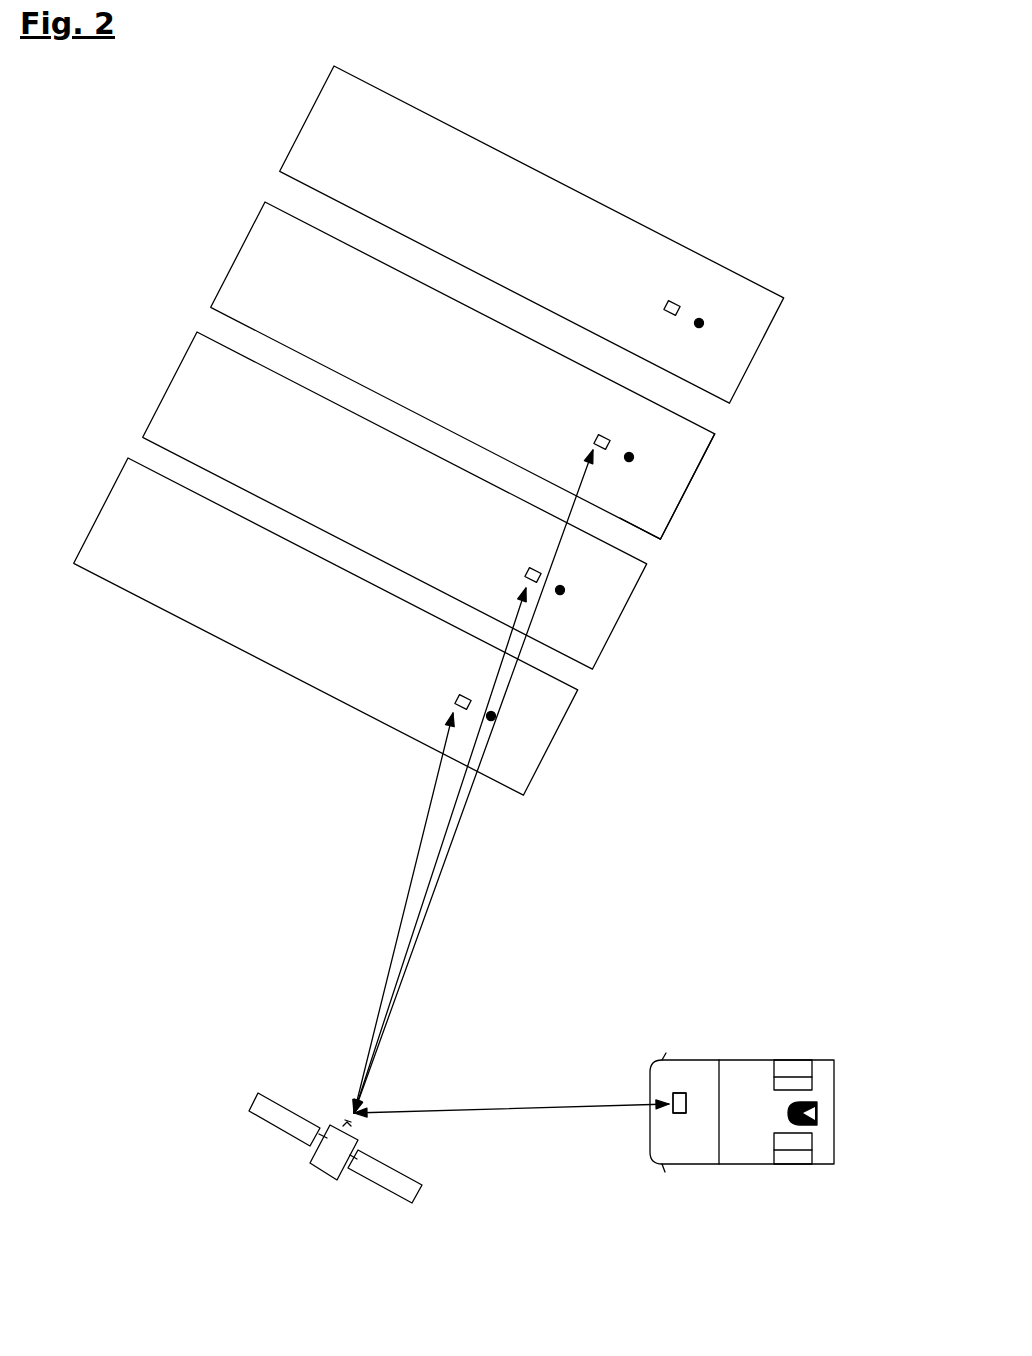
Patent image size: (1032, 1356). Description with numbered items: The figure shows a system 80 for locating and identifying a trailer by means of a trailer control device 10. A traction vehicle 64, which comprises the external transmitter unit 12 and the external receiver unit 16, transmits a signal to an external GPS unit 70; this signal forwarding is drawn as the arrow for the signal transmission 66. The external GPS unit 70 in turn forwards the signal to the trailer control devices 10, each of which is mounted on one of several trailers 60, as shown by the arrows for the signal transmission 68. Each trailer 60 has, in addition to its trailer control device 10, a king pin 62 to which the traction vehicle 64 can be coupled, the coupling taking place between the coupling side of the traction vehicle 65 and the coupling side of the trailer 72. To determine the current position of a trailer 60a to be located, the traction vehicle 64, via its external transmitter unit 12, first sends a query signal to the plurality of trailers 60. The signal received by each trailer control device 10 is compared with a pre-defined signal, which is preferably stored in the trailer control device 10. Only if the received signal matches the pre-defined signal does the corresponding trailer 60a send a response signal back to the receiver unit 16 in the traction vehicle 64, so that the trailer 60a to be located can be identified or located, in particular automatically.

The trailer control device 10 is at (665, 301).
The external transmitter unit 12 is at (687, 1093).
The external receiver unit 16 is at (679, 1103).
The trailer 60 is at (727, 268).
The trailer to be located 60a is at (692, 482).
The king pin 62 is at (706, 326).
The traction vehicle 64 is at (834, 1103).
The coupling side of the traction vehicle 65 is at (834, 1135).
The signal transmission 66 is at (469, 1102).
The signal transmission 68 is at (457, 838).
The external GPS unit 70 is at (328, 1182).
The coupling side of the trailer 72 is at (675, 505).
The system 80 is at (165, 183).